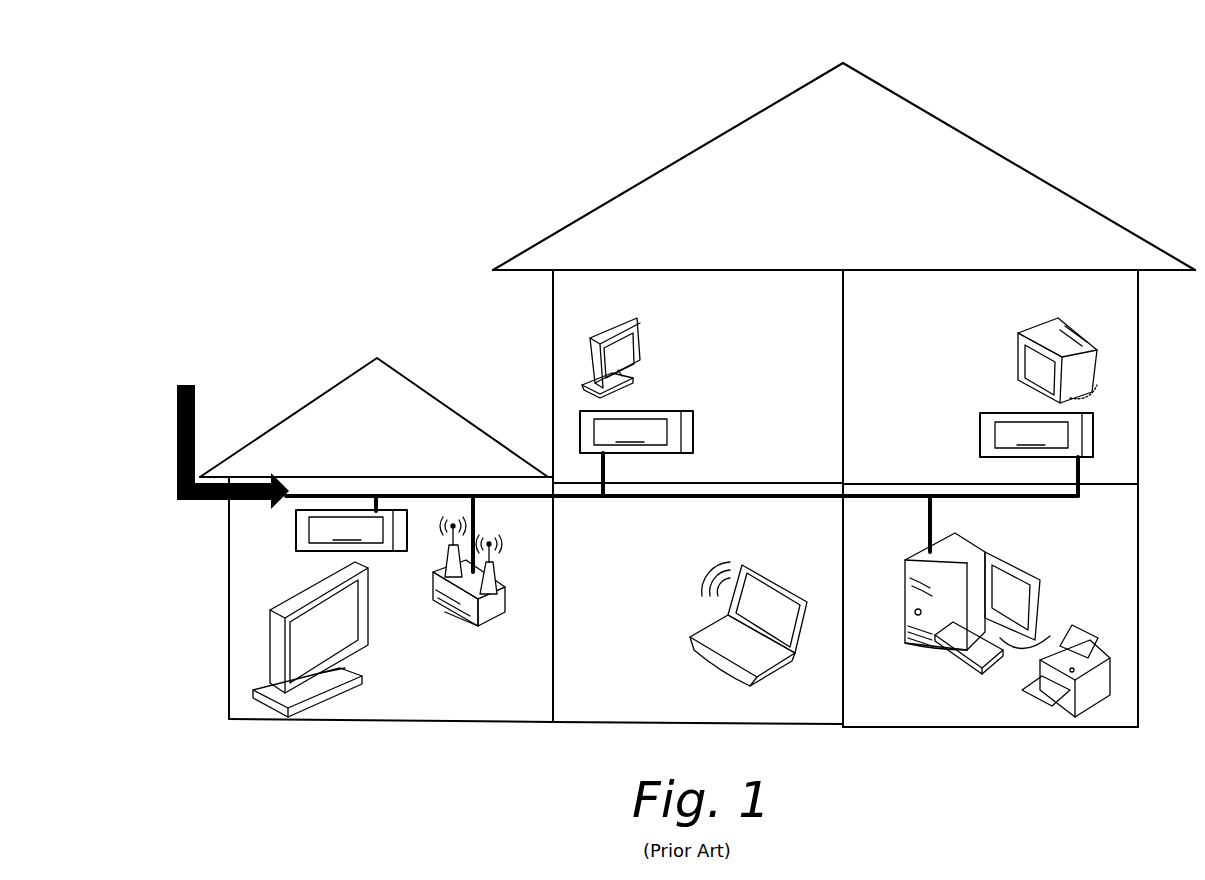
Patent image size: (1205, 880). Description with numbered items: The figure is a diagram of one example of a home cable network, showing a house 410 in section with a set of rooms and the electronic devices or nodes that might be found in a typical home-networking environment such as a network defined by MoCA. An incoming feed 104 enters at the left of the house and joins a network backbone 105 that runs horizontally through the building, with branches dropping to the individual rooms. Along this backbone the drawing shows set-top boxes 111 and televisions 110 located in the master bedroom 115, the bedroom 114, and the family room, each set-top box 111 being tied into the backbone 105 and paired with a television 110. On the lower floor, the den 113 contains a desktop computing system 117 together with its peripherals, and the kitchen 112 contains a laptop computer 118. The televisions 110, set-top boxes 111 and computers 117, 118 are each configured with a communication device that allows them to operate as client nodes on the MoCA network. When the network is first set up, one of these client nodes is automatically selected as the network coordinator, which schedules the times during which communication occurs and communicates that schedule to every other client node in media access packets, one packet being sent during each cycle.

The home 410 is at (1052, 80).
The incoming broadband connection 104 is at (196, 397).
The home network backbone 105 is at (632, 499).
The television 110 is at (348, 677).
The set-top box 111 is at (540, 713).
The kitchen 112 is at (694, 715).
The den 113 is at (933, 718).
The bedroom 114 is at (935, 476).
The master bedroom 115 is at (818, 475).
The desktop computing system 117 is at (1048, 553).
The laptop computer 118 is at (677, 632).